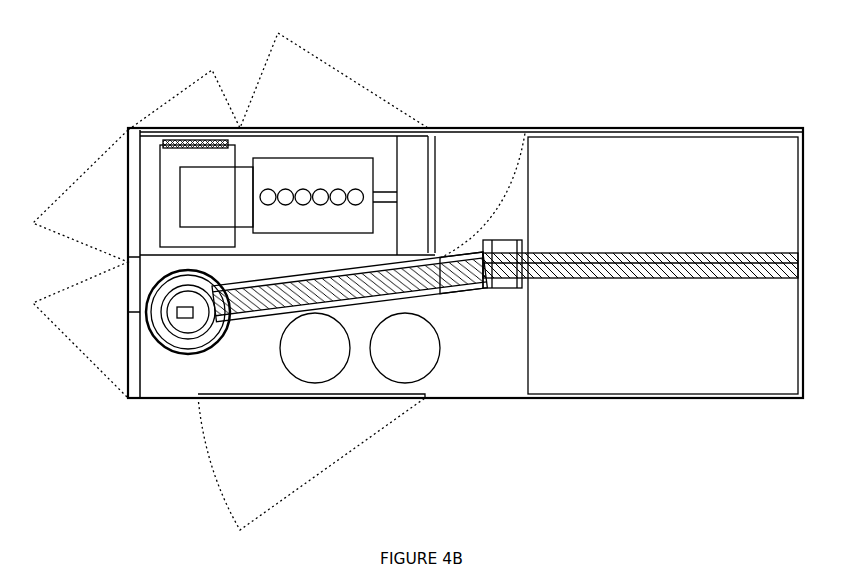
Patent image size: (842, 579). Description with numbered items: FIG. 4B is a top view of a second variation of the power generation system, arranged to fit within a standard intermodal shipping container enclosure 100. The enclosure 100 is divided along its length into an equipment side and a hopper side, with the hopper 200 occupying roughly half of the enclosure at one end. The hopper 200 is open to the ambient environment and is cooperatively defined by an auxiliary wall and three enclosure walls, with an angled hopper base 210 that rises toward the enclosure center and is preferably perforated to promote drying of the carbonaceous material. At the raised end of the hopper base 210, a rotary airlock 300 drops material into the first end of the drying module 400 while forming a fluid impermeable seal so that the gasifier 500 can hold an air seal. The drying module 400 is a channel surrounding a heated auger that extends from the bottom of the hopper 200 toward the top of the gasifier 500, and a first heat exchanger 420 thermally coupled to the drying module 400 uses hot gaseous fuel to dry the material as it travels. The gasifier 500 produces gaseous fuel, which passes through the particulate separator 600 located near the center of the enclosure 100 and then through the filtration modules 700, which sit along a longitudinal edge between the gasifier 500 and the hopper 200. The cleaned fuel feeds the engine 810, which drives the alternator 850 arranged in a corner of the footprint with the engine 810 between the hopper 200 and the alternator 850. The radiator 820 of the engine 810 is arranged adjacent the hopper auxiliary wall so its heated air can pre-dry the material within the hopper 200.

The enclosure 100 is at (543, 121).
The hopper 200 is at (705, 164).
The hopper base 210 is at (650, 251).
The airlock 300 is at (501, 291).
The drying module 400 is at (291, 309).
The first heat exchanger 420 is at (458, 292).
The gasifier 500 is at (138, 292).
The particulate separator 600 is at (251, 333).
The filtration module 700 is at (322, 368).
The engine 810 is at (353, 162).
The radiator 820 is at (490, 146).
The alternator 850 is at (190, 162).